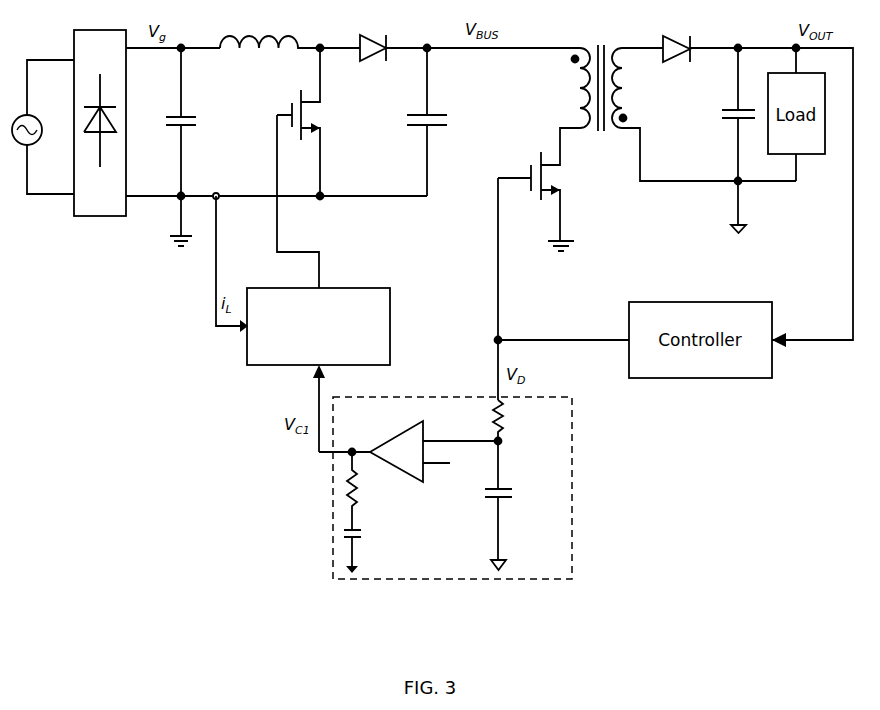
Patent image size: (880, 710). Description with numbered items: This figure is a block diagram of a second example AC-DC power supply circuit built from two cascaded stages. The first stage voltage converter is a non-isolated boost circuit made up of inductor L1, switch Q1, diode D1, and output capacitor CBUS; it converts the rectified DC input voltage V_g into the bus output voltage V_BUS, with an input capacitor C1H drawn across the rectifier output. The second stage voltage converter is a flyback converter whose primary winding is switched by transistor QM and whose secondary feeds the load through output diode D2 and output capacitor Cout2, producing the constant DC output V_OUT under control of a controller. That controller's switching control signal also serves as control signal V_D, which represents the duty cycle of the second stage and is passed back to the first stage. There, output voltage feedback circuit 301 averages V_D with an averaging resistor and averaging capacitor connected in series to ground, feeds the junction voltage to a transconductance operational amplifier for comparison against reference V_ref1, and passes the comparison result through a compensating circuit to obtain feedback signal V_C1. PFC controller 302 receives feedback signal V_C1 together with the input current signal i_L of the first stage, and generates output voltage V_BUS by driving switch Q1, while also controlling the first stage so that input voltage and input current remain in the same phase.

The output voltage feedback circuit 301 is at (559, 570).
The PFC controller 302 is at (304, 348).
The inductor L1 is at (270, 28).
The diode D1 is at (373, 35).
The output diode D2 is at (676, 35).
The switch Q1 is at (309, 122).
The main switch transistor QM is at (542, 201).
The input capacitor C1H is at (189, 122).
The output capacitor CBUS is at (413, 122).
The output capacitor Cout2 is at (722, 114).